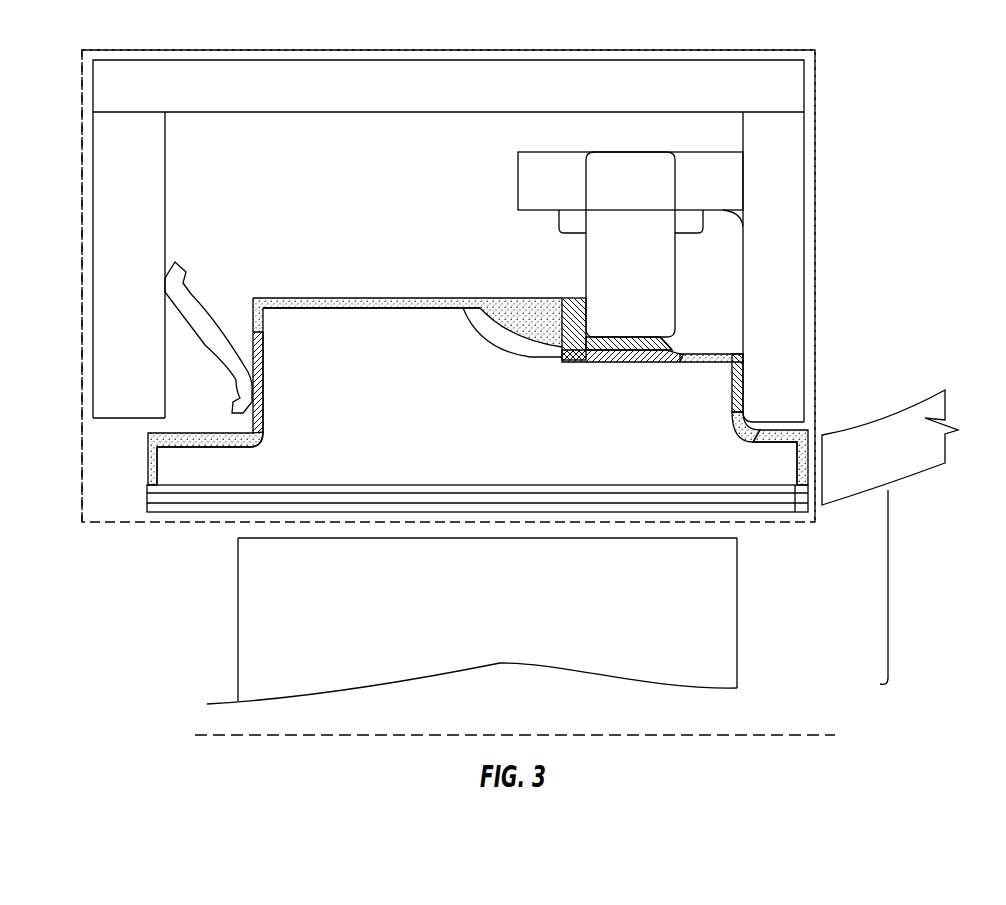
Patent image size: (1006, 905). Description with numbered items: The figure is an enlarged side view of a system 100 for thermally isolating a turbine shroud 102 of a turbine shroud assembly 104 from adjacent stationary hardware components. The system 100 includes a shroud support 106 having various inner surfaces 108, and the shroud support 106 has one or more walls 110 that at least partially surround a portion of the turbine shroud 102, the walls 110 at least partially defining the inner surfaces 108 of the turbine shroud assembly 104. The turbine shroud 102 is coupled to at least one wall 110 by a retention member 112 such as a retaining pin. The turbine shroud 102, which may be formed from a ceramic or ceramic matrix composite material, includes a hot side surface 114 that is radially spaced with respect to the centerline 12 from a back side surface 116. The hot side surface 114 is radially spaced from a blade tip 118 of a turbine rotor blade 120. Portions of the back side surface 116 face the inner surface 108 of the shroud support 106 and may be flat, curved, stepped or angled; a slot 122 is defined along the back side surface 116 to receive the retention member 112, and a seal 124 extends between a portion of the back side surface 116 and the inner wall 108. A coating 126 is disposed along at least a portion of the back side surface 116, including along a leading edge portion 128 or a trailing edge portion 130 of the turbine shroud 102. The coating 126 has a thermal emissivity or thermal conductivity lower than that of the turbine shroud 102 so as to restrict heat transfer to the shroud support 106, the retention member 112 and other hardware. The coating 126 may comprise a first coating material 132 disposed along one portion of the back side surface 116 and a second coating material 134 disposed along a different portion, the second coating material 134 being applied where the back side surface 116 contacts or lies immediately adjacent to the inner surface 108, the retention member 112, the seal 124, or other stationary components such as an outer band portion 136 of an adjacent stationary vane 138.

The centerline 12 is at (445, 733).
The system 100 is at (648, 48).
The turbine shroud 102 is at (472, 432).
The turbine shroud assembly 104 is at (826, 140).
The shroud support 106 is at (456, 212).
The inner surfaces 108 is at (165, 187).
The walls 110 is at (278, 72).
The retention member 112 is at (587, 240).
The hot side surface 114 is at (232, 513).
The back side surface 116 is at (397, 304).
The blade tip 118 is at (362, 540).
The turbine rotor blade 120 is at (472, 621).
The slot 122 is at (528, 306).
The seal 124 is at (208, 315).
The coating 126 is at (348, 298).
The leading edge portion 128 is at (143, 476).
The trailing edge portion 130 is at (780, 511).
The first coating material 132 is at (318, 312).
The second coating material 134 is at (268, 395).
The outer band portion 136 is at (860, 452).
The stationary vane 138 is at (951, 582).